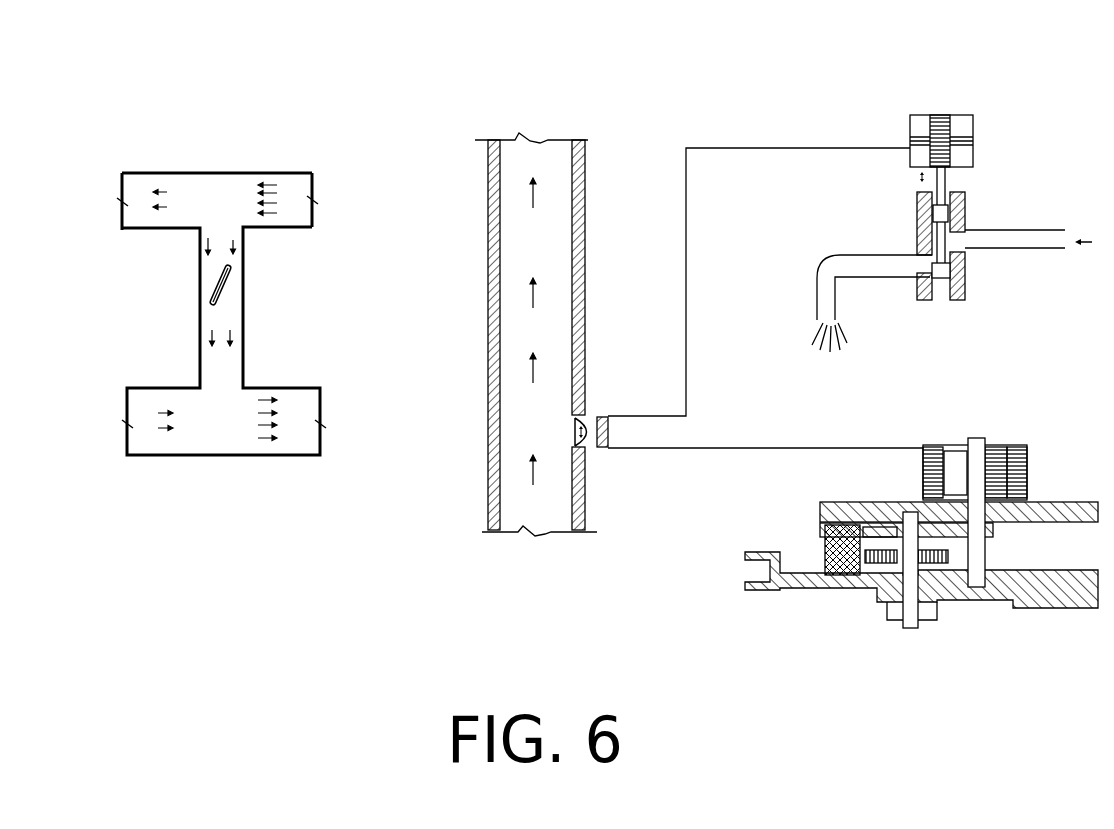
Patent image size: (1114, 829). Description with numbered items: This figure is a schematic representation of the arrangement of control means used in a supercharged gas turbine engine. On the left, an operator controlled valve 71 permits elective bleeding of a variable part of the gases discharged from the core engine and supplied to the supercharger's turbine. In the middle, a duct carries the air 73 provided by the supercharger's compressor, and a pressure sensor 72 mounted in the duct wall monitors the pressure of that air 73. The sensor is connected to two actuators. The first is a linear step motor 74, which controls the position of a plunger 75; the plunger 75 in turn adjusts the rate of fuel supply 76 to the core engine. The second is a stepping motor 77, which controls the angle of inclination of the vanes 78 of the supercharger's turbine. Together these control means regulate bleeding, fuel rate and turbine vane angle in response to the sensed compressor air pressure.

The operator controlled valve 71 is at (215, 287).
The pressure sensor 72 is at (600, 417).
The air 73 is at (535, 373).
The linear step motor 74 is at (947, 137).
The plunger 75 is at (943, 270).
The fuel supply 76 is at (833, 335).
The stepping motor 77 is at (1000, 478).
The vanes 78 is at (897, 610).